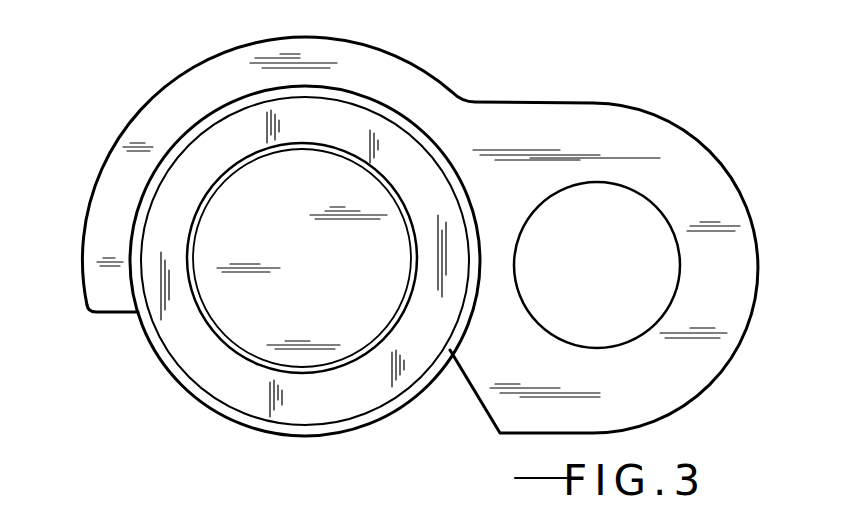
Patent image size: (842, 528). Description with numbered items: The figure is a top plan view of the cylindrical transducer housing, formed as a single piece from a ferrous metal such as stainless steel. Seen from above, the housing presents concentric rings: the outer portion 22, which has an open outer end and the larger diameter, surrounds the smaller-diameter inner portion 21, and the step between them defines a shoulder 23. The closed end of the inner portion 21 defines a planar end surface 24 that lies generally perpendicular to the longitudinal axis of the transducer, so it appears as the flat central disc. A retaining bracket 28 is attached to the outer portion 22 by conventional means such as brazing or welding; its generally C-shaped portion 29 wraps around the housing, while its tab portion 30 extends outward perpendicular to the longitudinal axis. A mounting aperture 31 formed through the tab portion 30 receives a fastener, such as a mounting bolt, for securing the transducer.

The inner portion 21 is at (408, 236).
The outer portion 22 is at (383, 110).
The shoulder 23 is at (237, 147).
The planar end surface 24 is at (320, 323).
The retaining bracket 28 is at (418, 99).
The C-shaped portion 29 is at (122, 168).
The tab portion 30 is at (577, 137).
The mounting aperture 31 is at (643, 217).